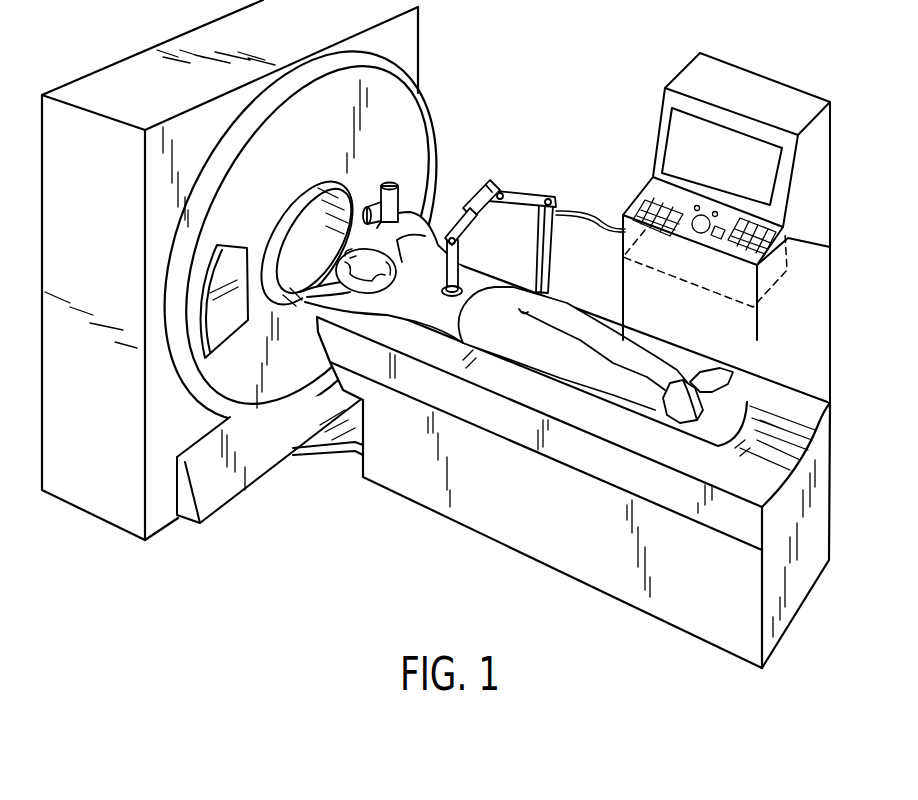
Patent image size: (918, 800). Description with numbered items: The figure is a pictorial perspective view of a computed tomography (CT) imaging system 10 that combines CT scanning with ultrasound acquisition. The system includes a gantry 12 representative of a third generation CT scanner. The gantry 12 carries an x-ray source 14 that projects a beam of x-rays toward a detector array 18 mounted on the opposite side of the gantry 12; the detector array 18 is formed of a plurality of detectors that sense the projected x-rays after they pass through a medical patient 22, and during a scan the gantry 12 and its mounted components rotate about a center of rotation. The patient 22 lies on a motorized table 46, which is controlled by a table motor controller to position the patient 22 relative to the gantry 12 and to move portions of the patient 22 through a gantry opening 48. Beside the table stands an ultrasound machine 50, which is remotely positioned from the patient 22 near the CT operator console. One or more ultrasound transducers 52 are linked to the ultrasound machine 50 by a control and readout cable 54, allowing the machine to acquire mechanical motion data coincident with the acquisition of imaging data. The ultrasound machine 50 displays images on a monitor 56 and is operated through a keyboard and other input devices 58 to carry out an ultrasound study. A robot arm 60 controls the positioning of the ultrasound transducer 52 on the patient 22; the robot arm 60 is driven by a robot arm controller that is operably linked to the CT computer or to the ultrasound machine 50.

The CT imaging system 10 is at (324, 474).
The gantry 12 is at (410, 147).
The x-ray source 14 is at (399, 203).
The detector array 18 is at (222, 330).
The medical patient 22 is at (325, 333).
The motorized table 46 is at (558, 547).
The gantry opening 48 is at (297, 225).
The ultrasound machine 50 is at (840, 150).
The ultrasound transducer 52 is at (476, 273).
The control and readout cable 54 is at (600, 225).
The monitor 56 is at (738, 167).
The keyboard and other input devices 58 is at (682, 246).
The robot arm 60 is at (515, 188).